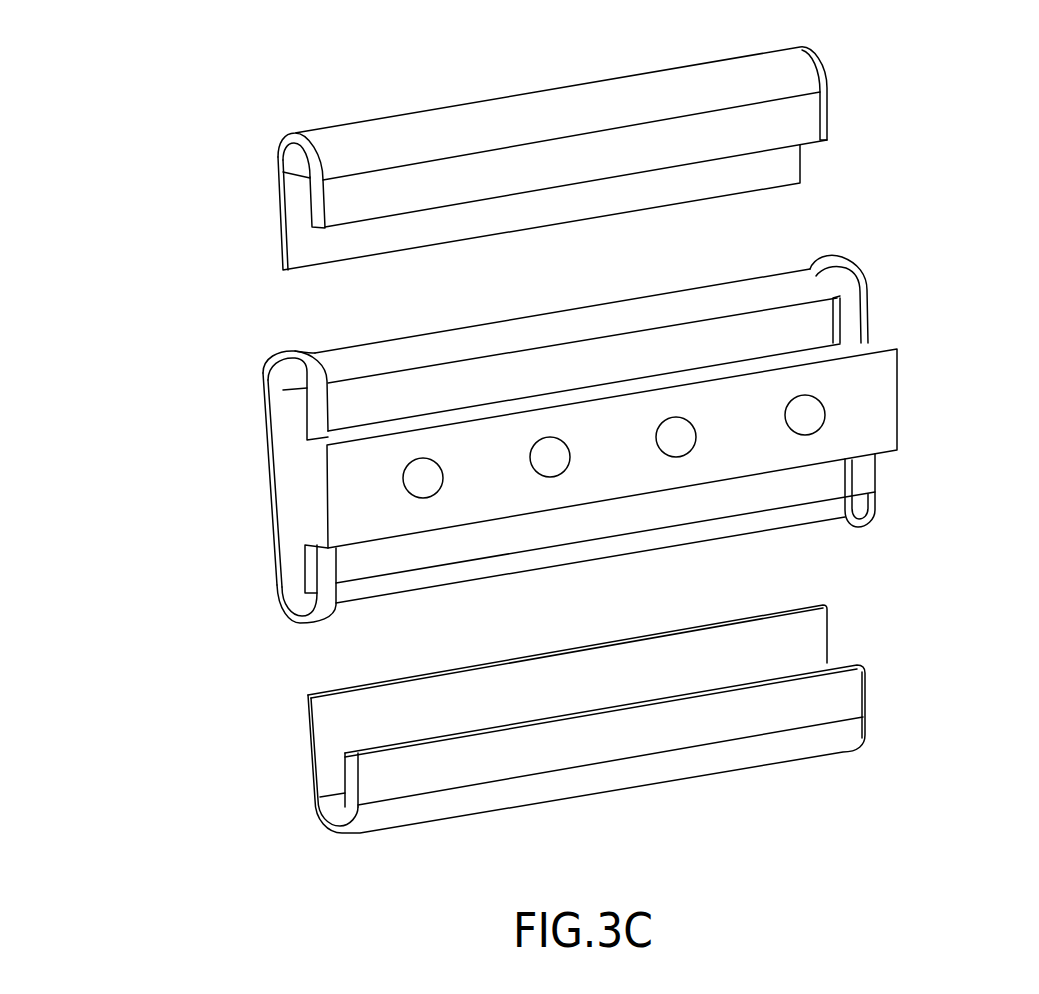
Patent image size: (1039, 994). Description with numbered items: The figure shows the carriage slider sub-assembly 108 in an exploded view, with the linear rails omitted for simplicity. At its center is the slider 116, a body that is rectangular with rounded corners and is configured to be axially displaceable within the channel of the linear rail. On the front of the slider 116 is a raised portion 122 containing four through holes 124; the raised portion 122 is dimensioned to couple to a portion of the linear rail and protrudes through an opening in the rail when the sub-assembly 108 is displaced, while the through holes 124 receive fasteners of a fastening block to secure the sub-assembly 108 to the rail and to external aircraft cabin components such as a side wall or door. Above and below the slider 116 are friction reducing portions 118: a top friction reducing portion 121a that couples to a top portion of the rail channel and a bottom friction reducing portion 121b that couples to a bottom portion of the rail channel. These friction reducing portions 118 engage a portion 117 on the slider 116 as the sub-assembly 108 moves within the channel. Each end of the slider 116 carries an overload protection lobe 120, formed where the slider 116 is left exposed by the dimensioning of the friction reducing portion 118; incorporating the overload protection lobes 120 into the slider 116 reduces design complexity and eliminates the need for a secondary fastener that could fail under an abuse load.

The carriage slider sub-assembly 108 is at (88, 191).
The slider 116 is at (952, 243).
The portion 117 is at (740, 312).
The friction reducing portion 118 is at (248, 90).
The overload protection lobe 120 is at (303, 355).
The top friction reducing portion 121a is at (540, 105).
The bottom friction reducing portion 121b is at (625, 775).
The raised portion 122 is at (373, 515).
The through holes 124 is at (805, 420).